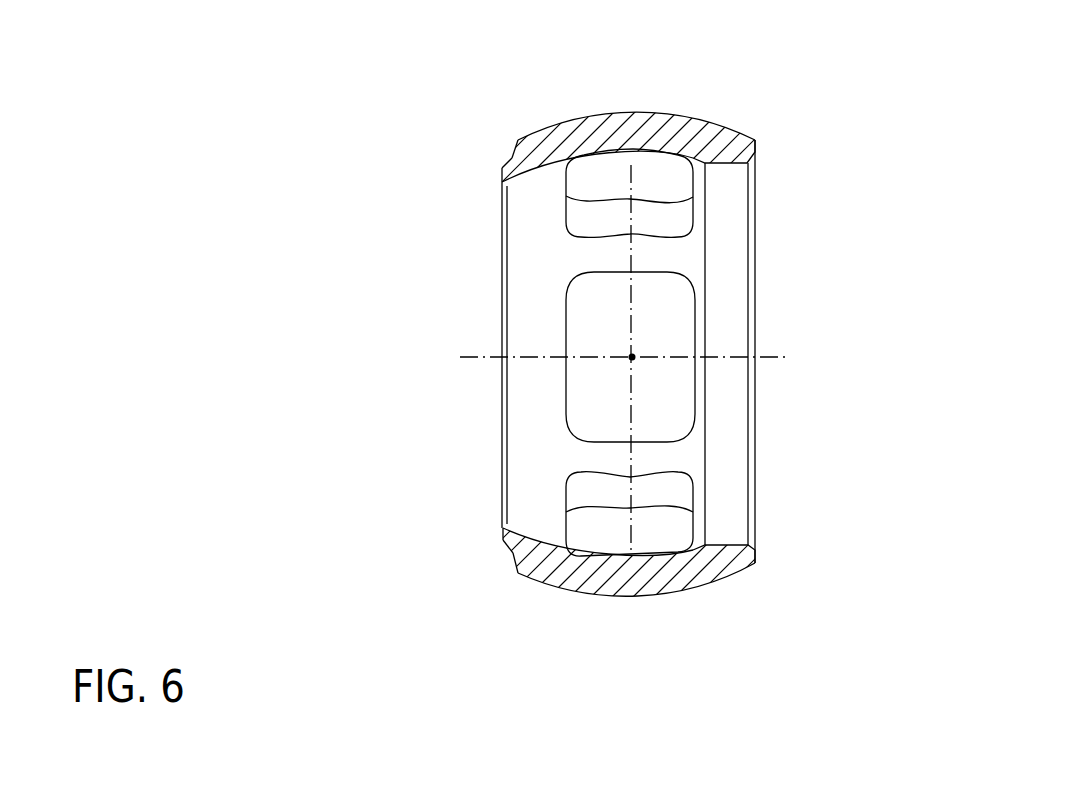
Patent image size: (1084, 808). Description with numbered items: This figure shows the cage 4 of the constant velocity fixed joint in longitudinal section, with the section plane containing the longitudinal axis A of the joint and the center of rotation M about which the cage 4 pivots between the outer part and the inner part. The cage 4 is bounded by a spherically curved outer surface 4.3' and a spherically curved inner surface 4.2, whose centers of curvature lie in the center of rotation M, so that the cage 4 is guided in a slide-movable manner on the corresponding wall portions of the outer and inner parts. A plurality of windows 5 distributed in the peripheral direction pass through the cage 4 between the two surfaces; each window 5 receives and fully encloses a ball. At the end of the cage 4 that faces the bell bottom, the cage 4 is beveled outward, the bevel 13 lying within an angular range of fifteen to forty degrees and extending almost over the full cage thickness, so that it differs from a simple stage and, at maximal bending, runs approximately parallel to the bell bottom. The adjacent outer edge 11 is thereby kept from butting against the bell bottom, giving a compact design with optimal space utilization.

The cage 4 is at (542, 324).
The inner spherically curved surface 4.2 is at (657, 150).
The outer spherically curved surface 4.3' is at (636, 307).
The window 5 is at (677, 218).
The outer edge 11 is at (518, 138).
The bevel 13 is at (512, 158).
The longitudinal axis A is at (474, 358).
The center of rotation M is at (632, 357).